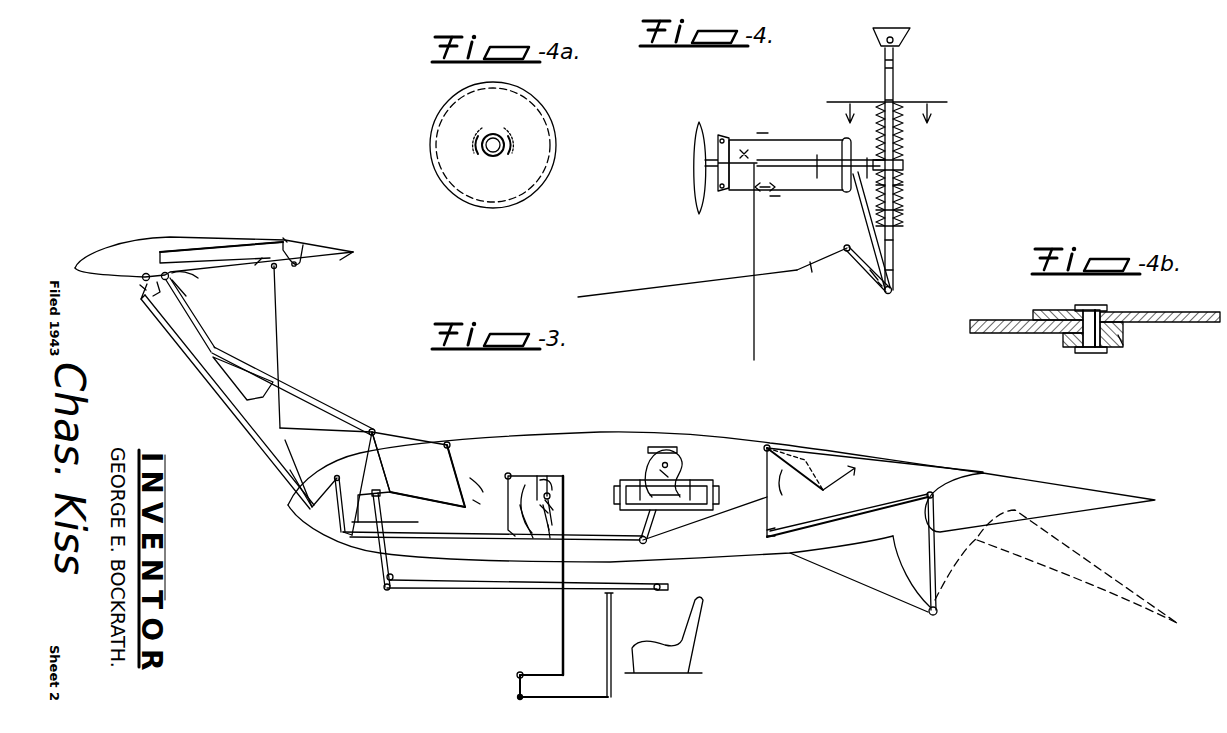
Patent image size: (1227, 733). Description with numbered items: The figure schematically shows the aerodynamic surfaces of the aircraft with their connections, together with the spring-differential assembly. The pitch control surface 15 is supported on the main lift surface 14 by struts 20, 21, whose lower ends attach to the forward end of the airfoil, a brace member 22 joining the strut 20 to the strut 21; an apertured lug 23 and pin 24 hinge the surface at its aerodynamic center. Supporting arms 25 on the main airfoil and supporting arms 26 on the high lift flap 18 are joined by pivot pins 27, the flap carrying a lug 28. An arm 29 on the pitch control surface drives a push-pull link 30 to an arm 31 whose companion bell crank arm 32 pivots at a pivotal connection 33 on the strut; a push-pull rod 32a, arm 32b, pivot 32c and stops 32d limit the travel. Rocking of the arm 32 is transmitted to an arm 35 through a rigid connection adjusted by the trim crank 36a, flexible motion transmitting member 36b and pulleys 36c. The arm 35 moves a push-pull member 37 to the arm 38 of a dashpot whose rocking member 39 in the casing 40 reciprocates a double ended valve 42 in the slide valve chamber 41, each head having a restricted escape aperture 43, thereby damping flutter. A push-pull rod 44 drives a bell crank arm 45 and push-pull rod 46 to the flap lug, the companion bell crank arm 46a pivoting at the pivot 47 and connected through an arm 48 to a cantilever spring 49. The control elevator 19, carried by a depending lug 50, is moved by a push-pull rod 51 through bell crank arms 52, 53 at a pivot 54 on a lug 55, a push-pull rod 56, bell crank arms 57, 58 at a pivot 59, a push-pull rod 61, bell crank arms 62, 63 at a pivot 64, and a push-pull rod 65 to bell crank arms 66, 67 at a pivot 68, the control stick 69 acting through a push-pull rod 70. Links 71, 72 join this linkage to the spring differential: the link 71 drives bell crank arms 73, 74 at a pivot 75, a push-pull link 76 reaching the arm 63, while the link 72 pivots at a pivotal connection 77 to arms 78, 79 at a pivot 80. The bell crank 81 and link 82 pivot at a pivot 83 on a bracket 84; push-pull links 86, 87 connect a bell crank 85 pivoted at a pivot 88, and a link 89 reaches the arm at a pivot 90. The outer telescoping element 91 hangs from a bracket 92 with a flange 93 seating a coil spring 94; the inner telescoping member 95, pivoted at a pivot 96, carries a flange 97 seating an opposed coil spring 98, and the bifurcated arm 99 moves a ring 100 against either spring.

In FIG. 3, the main lift surface 14 is at (735, 446).
In FIG. 3, the pitch control surface 15 is at (104, 248).
In FIG. 3, the high lift flap 18 is at (1108, 500).
In FIG. 3, the control elevator 19 is at (352, 252).
In FIG. 3, the strut 20 is at (310, 398).
In FIG. 3, the strut 21 is at (205, 346).
In FIG. 3, the brace member 22 is at (245, 372).
In FIG. 3, the apertured lug 23 is at (142, 280).
In FIG. 3, the pin 24 is at (163, 272).
In FIG. 3, the supporting arm 25 is at (870, 570).
In FIG. 3, the supporting arm 26 is at (938, 558).
In FIG. 3, the pivot pin 27 is at (933, 617).
In FIG. 3, the lug 28 is at (929, 495).
In FIG. 3, the arm 29 is at (270, 270).
In FIG. 3, the push-pull link 30 is at (280, 318).
In FIG. 3, the arm 31 is at (300, 428).
In FIG. 3, the bell crank arm 32 is at (398, 465).
In FIG. 3, the push-pull rod 32a is at (427, 488).
In FIG. 3, the arm 32b is at (458, 462).
In FIG. 3, the pivot 32c is at (452, 442).
In FIG. 3, the stops 32d is at (491, 492).
In FIG. 3, the pivotal connection 33 is at (378, 430).
In FIG. 3, the arm 35 is at (380, 438).
In FIG. 3, the trim crank 36a is at (670, 587).
In FIG. 3, the flexible motion transmitting member 36b is at (460, 594).
In FIG. 3, the pulleys 36c is at (394, 578).
In FIG. 3, the push-pull member 37 is at (493, 545).
In FIG. 3, the arm 38 is at (645, 522).
In FIG. 3, the rocking member 39 is at (672, 462).
In FIG. 3, the casing 40 is at (685, 478).
In FIG. 3, the slide valve chamber 41 is at (700, 490).
In FIG. 3, the double ended valve 42 is at (642, 482).
In FIG. 3, the restricted escape aperture 43 is at (650, 528).
In FIG. 3, the push-pull rod 44 is at (735, 515).
In FIG. 3, the bell crank arm 45 is at (770, 521).
In FIG. 3, the push-pull rod 46 is at (912, 505).
In FIG. 3, the bell crank arm 46a is at (792, 488).
In FIG. 3, the pivot 47 is at (772, 447).
In FIG. 3, the arm 48 is at (847, 517).
In FIG. 3, the cantilever spring 49 is at (840, 490).
In FIG. 3, the depending lug 50 is at (298, 264).
In FIG. 3, the push-pull rod 51 is at (208, 250).
In FIG. 3, the bell crank arm 52 is at (215, 270).
In FIG. 3, the bell crank arm 53 is at (145, 300).
In FIG. 3, the pivot 54 is at (190, 278).
In FIG. 3, the lug 55 is at (160, 270).
In FIG. 3, the push-pull rod 56 is at (200, 378).
In FIG. 3, the bell crank arm 57 is at (292, 498).
In FIG. 3, the bell crank arm 58 is at (352, 533).
In FIG. 3, the pivot 59 is at (340, 470).
In FIG. 3, the push-pull rod 61 is at (460, 536).
In FIG. 3, the bell crank arm 62 is at (519, 535).
In FIG. 3, the bell crank arm 63 is at (540, 476).
In FIG. 3, the pivot 64 is at (510, 474).
In FIG. 3, the push-pull rod 65 is at (560, 600).
In FIG. 3, the bell crank arm 66 is at (530, 672).
In FIG. 3, the arm 67 is at (516, 685).
In FIG. 3, the pivot 68 is at (516, 673).
In FIG. 3, the control stick 69 is at (612, 620).
In FIG. 3, the push-pull rod 70 is at (588, 696).
In FIG. 3, the link 71 is at (553, 515).
In FIG. 4, the link 71 is at (752, 240).
In FIG. 3, the push-pull link 72 is at (420, 522).
In FIG. 4, the push-pull link 72 is at (648, 290).
In FIG. 3, the bell crank arm 73 is at (553, 500).
In FIG. 3, the bell crank arm 74 is at (546, 545).
In FIG. 3, the pivot 75 is at (553, 490).
In FIG. 3, the push-pull link 76 is at (532, 509).
In FIG. 4, the pivotal connection 77 is at (797, 268).
In FIG. 4, the arm 78 is at (828, 268).
In FIG. 4, the arm 79 is at (865, 270).
In FIG. 4, the pivot 80 is at (837, 237).
In FIG. 4, the bell crank 81 is at (738, 142).
In FIG. 4, the link 82 is at (790, 150).
In FIG. 4B, the link 82 is at (1030, 334).
In FIG. 4, the pivot 83 is at (704, 132).
In FIG. 4, the bracket 84 is at (716, 188).
In FIG. 4, the bell crank 85 is at (843, 141).
In FIG. 4B, the bell crank 85 is at (1168, 315).
In FIG. 4, the push-pull link 86 is at (784, 162).
In FIG. 4, the push-pull link 87 is at (798, 192).
In FIG. 4, the pivot 88 is at (905, 158).
In FIG. 4B, the pivot 88 is at (1092, 320).
In FIG. 4, the link 89 is at (903, 206).
In FIG. 4B, the link 89 is at (1122, 345).
In FIG. 4, the pivot 90 is at (878, 280).
In FIG. 4, the outer telescoping element 91 is at (896, 80).
In FIG. 4A, the outer telescoping element 91 is at (503, 142).
In FIG. 4, the bracket 92 is at (910, 32).
In FIG. 4, the flange 93 is at (903, 224).
In FIG. 4, the coil spring 94 is at (903, 188).
In FIG. 4, the inner telescoping member 95 is at (895, 248).
In FIG. 4A, the inner telescoping member 95 is at (498, 136).
In FIG. 4, the pivot 96 is at (893, 291).
In FIG. 4, the flange 97 is at (898, 112).
In FIG. 4A, the flange 97 is at (548, 152).
In FIG. 4, the coil spring 98 is at (903, 163).
In FIG. 4, the bifurcated arm 99 is at (858, 192).
In FIG. 4, the ring 100 is at (903, 168).